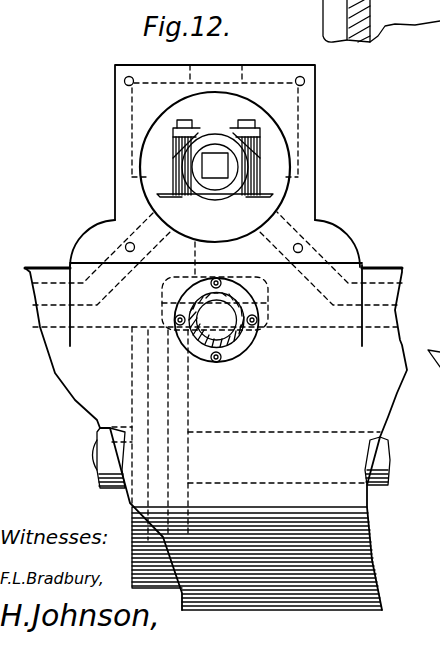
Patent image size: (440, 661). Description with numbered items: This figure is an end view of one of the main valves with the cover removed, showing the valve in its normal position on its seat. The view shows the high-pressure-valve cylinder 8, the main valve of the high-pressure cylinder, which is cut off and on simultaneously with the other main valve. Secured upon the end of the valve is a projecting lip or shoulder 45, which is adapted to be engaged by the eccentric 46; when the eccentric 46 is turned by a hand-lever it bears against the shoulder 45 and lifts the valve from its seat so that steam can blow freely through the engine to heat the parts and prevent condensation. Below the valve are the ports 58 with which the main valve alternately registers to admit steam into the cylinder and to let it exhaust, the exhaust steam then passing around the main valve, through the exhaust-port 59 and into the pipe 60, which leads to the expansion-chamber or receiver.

The high-pressure-valve cylinder 8 is at (260, 150).
The projecting lip or shoulder 45 is at (211, 127).
The eccentric 46 is at (215, 203).
The port 58 is at (110, 258).
The exhaust-port 59 is at (258, 288).
The pipe 60 is at (208, 343).